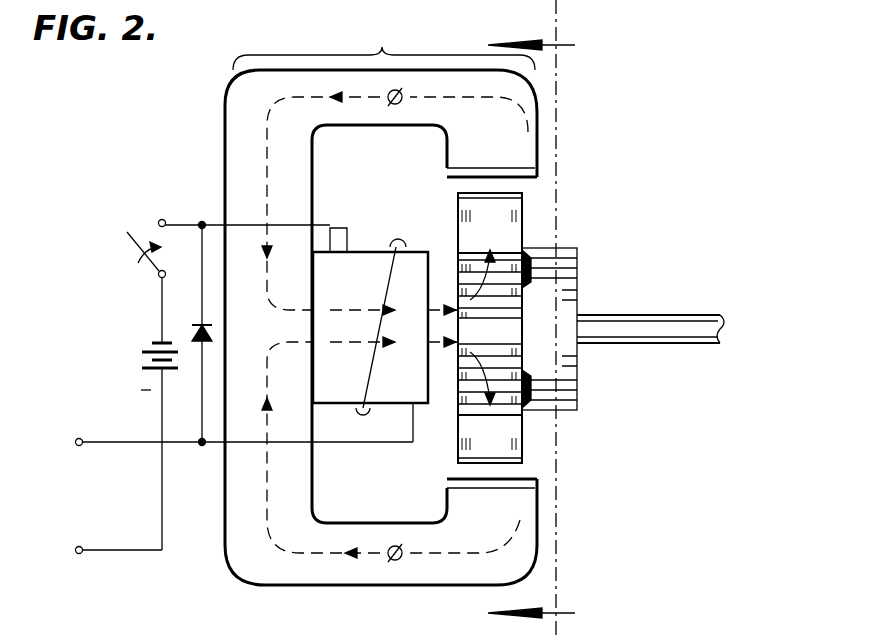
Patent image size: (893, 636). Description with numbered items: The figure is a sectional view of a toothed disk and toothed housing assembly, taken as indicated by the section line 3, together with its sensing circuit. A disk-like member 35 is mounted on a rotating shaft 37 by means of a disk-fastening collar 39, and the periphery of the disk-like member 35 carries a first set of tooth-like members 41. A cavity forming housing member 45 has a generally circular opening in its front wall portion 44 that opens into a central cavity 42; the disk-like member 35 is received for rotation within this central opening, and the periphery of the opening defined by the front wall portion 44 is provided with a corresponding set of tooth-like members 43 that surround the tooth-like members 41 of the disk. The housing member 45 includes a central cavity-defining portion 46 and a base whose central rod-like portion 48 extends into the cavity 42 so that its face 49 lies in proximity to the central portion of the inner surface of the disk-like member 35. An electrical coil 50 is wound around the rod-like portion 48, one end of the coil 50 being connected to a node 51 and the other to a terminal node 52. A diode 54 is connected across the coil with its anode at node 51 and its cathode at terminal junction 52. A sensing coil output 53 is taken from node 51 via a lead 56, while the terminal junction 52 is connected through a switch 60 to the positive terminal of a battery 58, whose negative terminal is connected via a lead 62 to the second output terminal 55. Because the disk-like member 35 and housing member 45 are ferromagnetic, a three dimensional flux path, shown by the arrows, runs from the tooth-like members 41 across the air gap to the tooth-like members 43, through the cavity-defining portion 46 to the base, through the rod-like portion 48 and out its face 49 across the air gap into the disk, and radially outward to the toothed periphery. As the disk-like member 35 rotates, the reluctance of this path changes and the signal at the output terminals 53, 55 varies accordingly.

The section line 3- 3 is at (544, 318).
The disk-like member 35 is at (525, 216).
The rotating shaft 37 is at (700, 315).
The disk-fastening collar 39 is at (578, 296).
The tooth-like members 41 is at (458, 347).
The central cavity 42 is at (372, 173).
The tooth-like members 43 is at (528, 180).
The front wall portion 44 is at (517, 150).
The housing member 45 is at (384, 43).
The cavity-defining portion 46 is at (240, 108).
The rod-like portion 48 is at (333, 296).
The face 49 is at (440, 265).
The electrical coil 50 is at (344, 228).
The node 51 is at (198, 449).
The terminal node 52 is at (162, 220).
The sensing coil output 53 is at (79, 448).
The diode 54 is at (192, 332).
The output terminal 55 is at (79, 556).
The lead 56 is at (134, 444).
The battery 58 is at (140, 352).
The switch 60 is at (126, 246).
The lead 62 is at (160, 544).